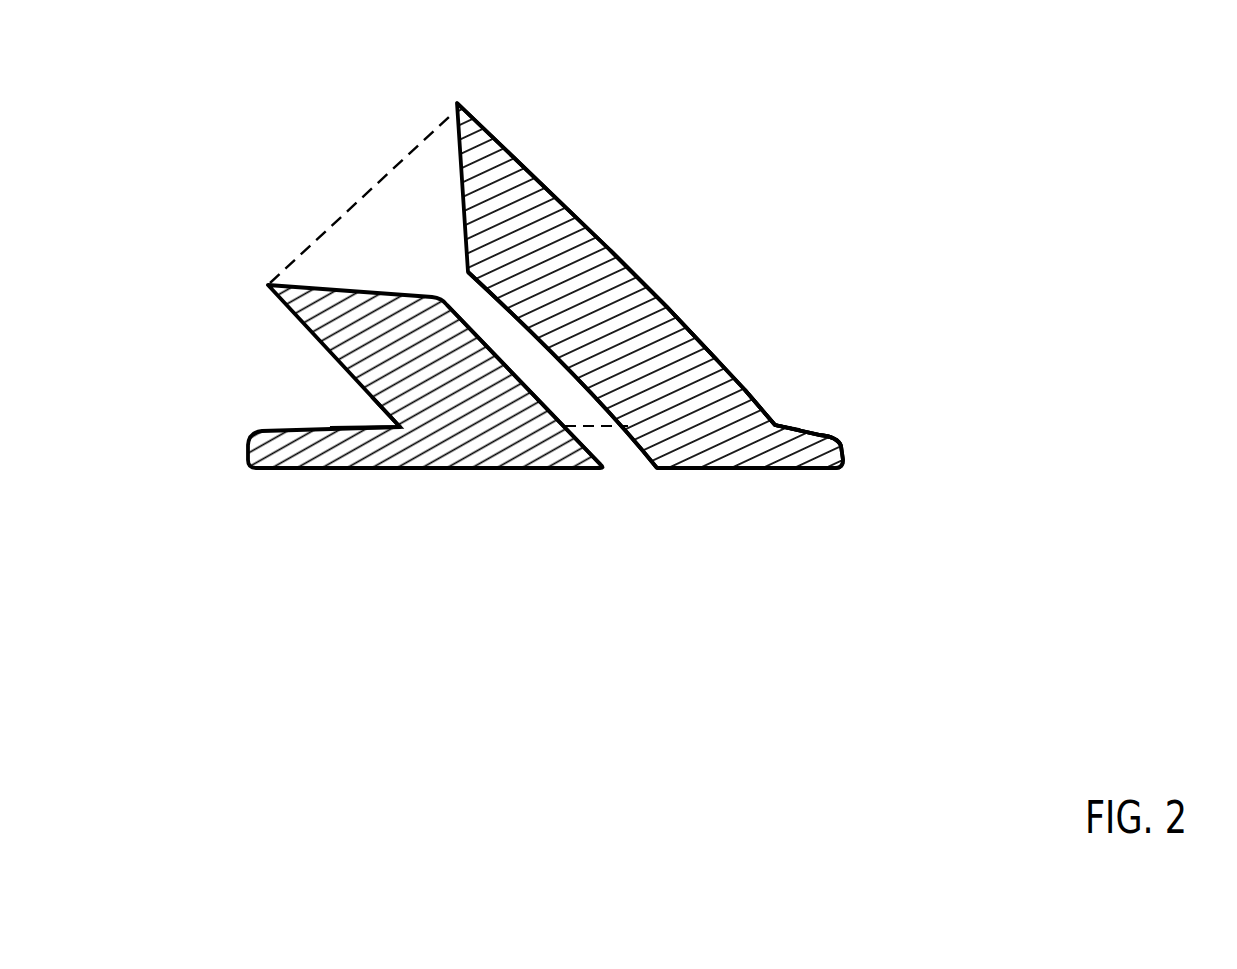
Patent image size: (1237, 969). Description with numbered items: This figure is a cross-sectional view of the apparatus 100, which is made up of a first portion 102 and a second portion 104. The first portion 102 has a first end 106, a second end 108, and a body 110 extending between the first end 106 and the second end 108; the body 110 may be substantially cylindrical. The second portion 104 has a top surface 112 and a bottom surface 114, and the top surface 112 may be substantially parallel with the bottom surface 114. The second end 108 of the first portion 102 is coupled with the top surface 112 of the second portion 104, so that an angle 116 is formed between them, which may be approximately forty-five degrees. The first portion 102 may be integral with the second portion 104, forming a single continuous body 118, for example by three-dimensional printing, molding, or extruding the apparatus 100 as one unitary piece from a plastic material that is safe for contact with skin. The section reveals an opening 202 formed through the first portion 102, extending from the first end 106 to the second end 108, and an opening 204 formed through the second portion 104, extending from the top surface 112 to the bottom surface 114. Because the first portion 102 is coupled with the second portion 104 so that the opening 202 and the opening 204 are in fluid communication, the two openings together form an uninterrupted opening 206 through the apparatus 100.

The apparatus 100 is at (300, 86).
The first portion 102 is at (578, 196).
The second portion 104 is at (832, 431).
The first end 106 is at (269, 285).
The second end 108 is at (775, 425).
The body 110 is at (638, 275).
The top surface 112 is at (819, 435).
The bottom surface 114 is at (338, 469).
The angle 116 is at (366, 403).
The single continuous body 118 is at (700, 289).
The opening 202 is at (438, 286).
The opening 204 is at (622, 462).
The uninterrupted opening 206 is at (520, 351).